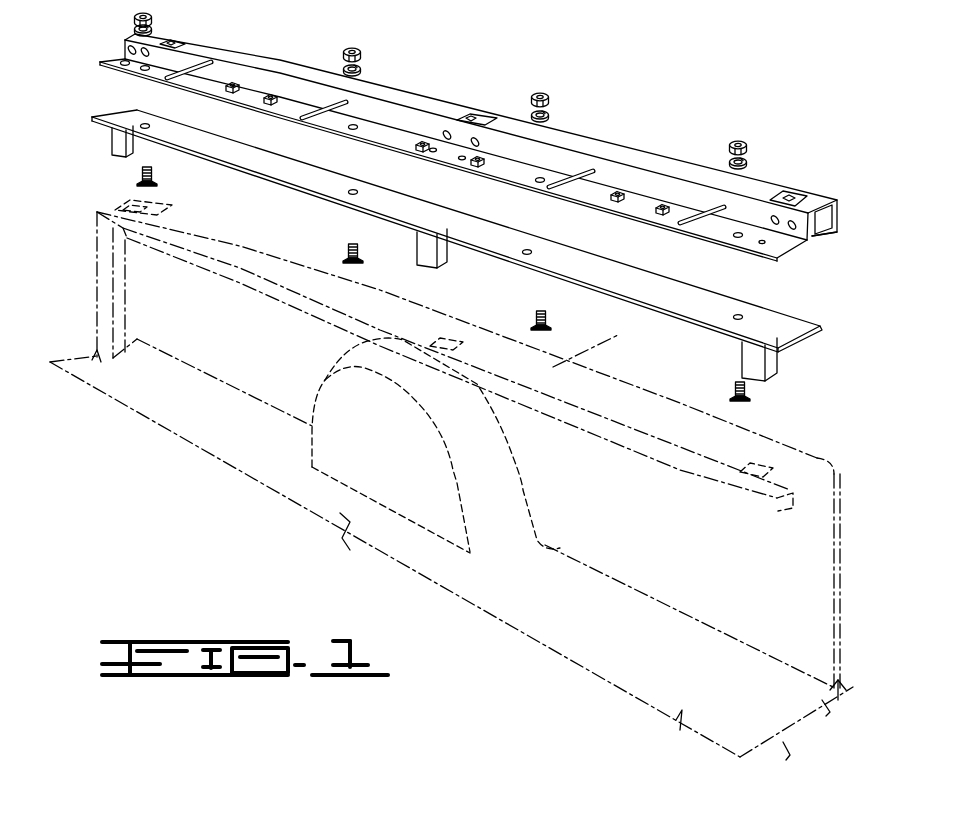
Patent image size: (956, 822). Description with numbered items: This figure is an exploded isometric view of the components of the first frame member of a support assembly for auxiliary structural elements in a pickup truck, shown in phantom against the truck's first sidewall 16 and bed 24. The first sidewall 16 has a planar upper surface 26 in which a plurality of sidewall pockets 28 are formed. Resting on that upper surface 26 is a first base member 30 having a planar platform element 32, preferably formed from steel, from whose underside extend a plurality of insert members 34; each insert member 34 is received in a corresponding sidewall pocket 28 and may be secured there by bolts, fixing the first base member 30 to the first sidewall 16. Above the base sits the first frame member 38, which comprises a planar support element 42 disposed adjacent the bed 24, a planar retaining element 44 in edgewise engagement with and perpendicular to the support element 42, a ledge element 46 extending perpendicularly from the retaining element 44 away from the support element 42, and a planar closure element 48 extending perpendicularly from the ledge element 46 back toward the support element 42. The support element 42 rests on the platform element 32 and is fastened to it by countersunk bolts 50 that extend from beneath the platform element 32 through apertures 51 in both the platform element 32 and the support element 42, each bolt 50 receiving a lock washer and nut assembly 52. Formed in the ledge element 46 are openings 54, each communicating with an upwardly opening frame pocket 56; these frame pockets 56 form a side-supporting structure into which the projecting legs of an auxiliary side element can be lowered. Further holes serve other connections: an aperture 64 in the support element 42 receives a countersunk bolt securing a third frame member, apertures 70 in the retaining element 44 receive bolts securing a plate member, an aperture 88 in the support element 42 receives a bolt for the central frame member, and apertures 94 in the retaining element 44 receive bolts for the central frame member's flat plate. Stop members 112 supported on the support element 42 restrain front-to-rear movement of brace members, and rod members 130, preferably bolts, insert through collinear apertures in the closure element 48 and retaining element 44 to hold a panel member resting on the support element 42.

The first sidewall 16 is at (577, 489).
The bed 24 is at (552, 646).
The planar upper surface 26 is at (457, 355).
The sidewall pockets 28 is at (172, 206).
The first base member 30 is at (800, 344).
The platform element 32 is at (660, 283).
The insert members 34 is at (111, 143).
The first frame member 38 is at (606, 118).
The support element 42 is at (791, 259).
The retaining element 44 is at (810, 242).
The ledge element 46 is at (838, 220).
The closure element 48 is at (838, 233).
The countersunk bolts 50 is at (155, 175).
The apertures 51 is at (146, 72).
The lock washer and nut assembly 52 is at (156, 22).
The openings 54 is at (188, 42).
The frame pockets 56 is at (176, 41).
The aperture 64 is at (122, 66).
The apertures 70 is at (126, 49).
The aperture 88 is at (440, 153).
The apertures 94 is at (444, 133).
The stop members 112 is at (234, 85).
The rod members 130 is at (172, 80).